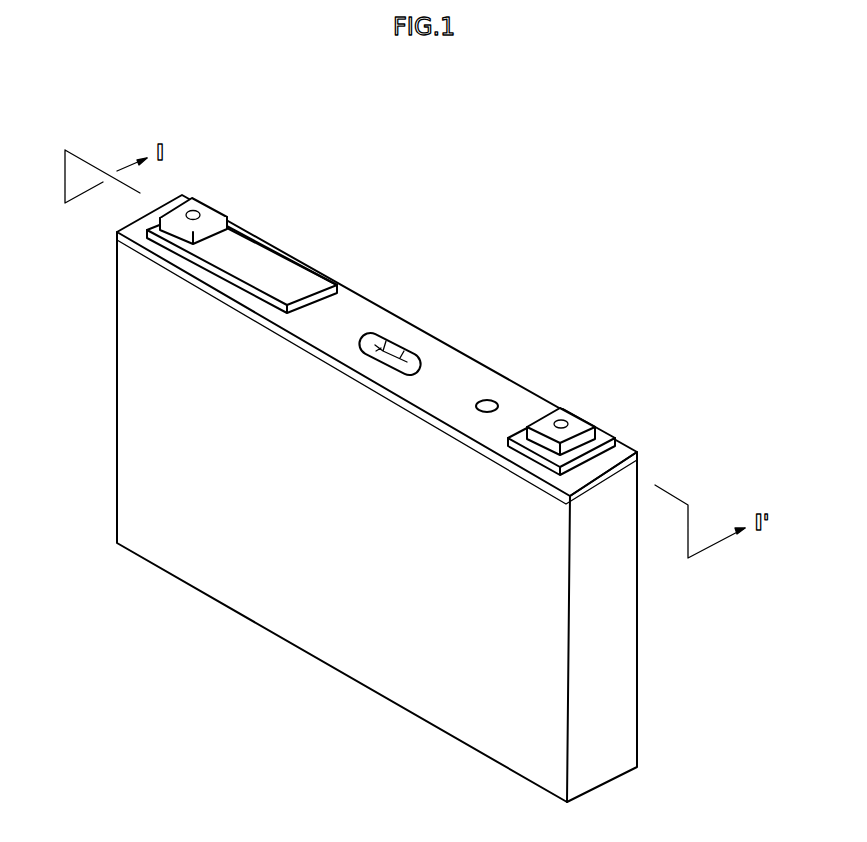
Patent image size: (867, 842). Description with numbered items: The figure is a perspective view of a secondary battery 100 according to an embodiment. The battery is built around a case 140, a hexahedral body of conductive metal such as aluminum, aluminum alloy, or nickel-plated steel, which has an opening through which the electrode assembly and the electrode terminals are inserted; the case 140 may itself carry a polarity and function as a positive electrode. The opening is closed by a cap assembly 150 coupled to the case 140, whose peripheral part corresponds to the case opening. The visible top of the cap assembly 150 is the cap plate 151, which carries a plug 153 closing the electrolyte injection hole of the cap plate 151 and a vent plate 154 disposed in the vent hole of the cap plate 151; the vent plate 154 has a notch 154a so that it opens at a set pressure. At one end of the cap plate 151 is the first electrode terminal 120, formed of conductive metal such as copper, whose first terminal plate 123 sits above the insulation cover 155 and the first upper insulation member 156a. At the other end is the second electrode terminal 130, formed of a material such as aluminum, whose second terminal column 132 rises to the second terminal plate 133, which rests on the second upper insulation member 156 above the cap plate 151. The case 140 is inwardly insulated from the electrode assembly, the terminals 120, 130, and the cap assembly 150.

The secondary battery 100 is at (702, 148).
The first electrode terminal 120 is at (225, 192).
The first terminal plate 123 is at (192, 198).
The second electrode terminal 130 is at (592, 393).
The second terminal column 132 is at (561, 422).
The second terminal plate 133 is at (586, 418).
The case 140 is at (325, 648).
The cap assembly 150 is at (473, 355).
The cap plate 151 is at (357, 318).
The plug 153 is at (487, 401).
The vent plate 154 is at (385, 340).
The notch 154a is at (402, 347).
The insulation cover 155 is at (248, 252).
The second upper insulation member 156 is at (605, 435).
The first upper insulation member 156a is at (308, 265).